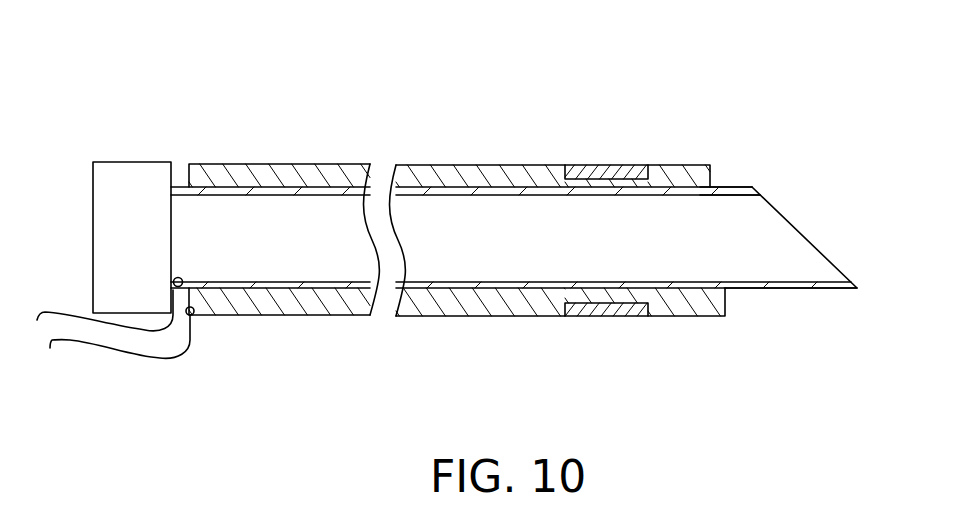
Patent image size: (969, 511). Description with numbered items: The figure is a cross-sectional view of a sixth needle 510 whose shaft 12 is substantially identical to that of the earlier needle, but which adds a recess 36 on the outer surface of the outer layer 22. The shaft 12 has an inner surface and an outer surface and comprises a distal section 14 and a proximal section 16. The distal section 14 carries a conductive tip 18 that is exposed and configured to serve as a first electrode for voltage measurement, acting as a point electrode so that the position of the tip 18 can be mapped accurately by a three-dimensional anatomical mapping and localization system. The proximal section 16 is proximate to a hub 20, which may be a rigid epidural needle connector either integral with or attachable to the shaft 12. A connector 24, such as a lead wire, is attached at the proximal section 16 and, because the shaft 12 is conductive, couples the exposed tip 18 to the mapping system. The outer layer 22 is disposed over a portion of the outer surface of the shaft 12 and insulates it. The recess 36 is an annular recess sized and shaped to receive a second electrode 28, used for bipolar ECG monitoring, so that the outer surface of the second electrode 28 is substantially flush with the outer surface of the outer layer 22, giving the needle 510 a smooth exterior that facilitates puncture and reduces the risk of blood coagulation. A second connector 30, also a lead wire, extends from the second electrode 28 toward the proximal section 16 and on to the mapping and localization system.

The sixth needle 510 is at (462, 108).
The hub 20 is at (93, 227).
The proximal section 16 is at (177, 186).
The shaft 12 is at (718, 187).
The distal section 14 is at (727, 190).
The outer layer 22 is at (510, 170).
The recess 36 is at (618, 183).
The second electrode 28 is at (600, 314).
The conductive tip 18 is at (805, 242).
The connector 24 is at (100, 325).
The second connector 30 is at (153, 361).